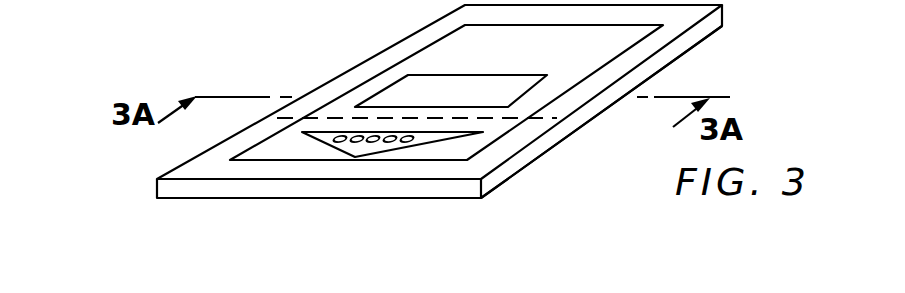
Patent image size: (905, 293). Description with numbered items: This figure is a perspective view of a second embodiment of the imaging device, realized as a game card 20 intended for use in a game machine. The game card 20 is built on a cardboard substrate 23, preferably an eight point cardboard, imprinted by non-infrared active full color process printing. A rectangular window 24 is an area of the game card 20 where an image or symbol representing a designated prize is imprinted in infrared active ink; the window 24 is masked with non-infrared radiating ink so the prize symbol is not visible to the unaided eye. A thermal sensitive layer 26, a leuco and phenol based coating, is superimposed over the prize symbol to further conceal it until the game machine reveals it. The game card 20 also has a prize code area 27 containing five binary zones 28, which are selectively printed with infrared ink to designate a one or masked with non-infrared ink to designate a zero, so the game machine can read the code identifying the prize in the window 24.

The game card 20 is at (167, 188).
The cardboard substrate 23 is at (500, 182).
The rectangular window 24 is at (549, 77).
The thermal sensitive layer 26 is at (397, 92).
The prize code area 27 is at (433, 135).
The binary zones 28 is at (326, 134).